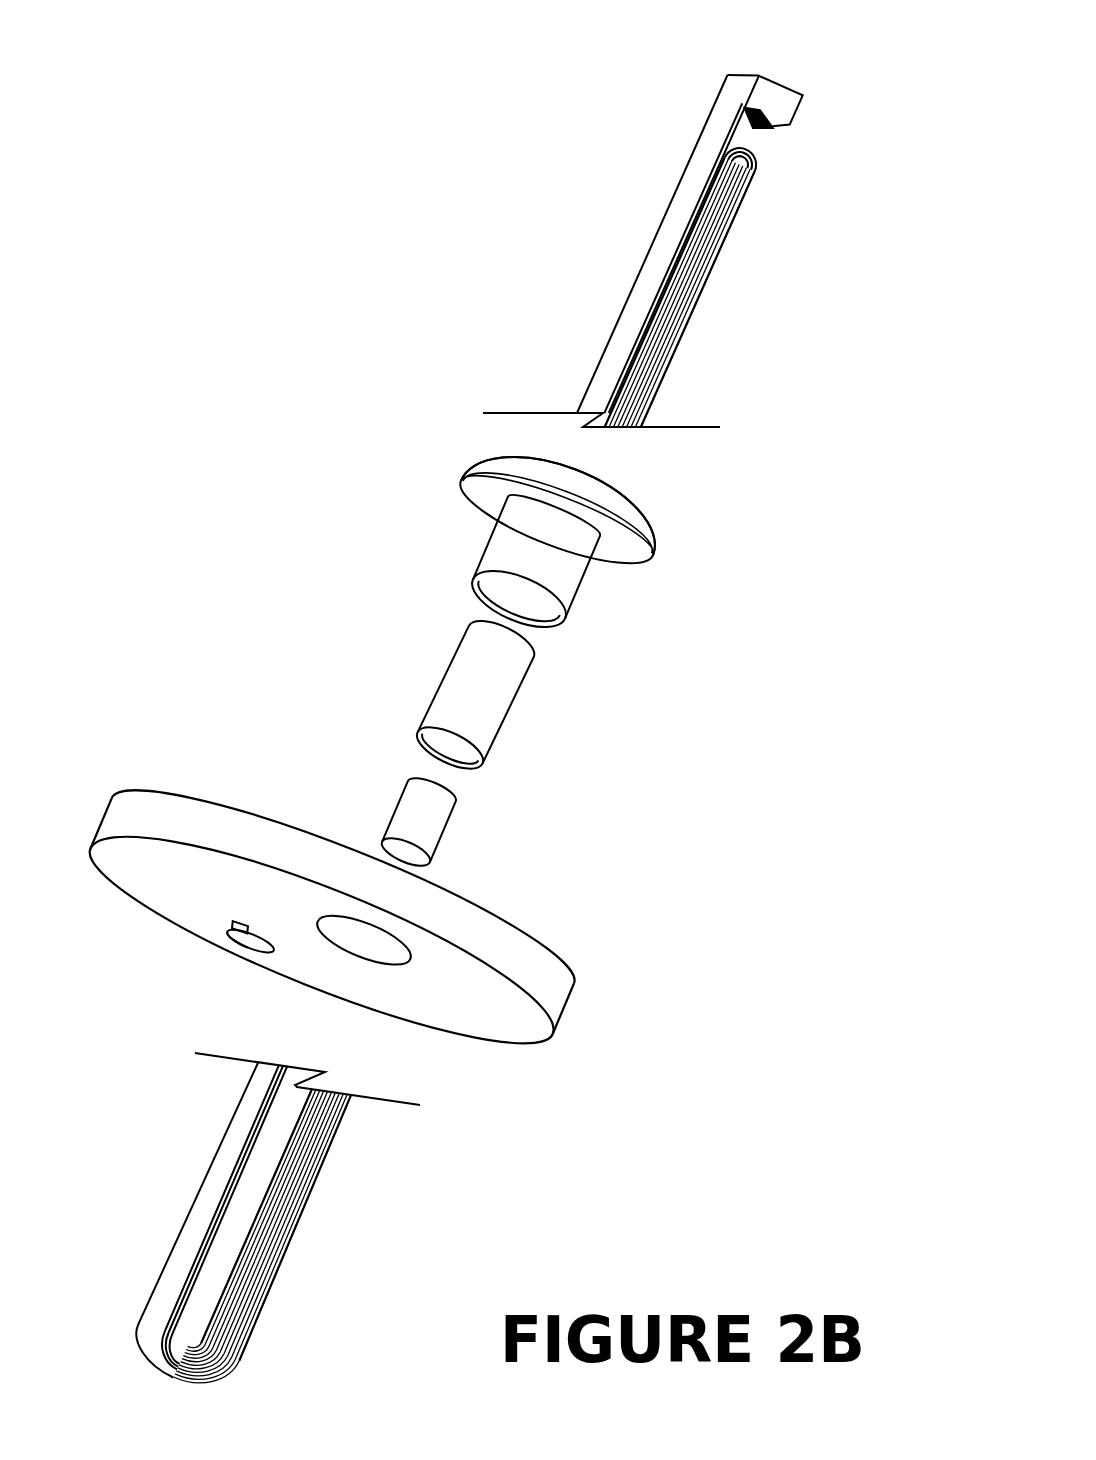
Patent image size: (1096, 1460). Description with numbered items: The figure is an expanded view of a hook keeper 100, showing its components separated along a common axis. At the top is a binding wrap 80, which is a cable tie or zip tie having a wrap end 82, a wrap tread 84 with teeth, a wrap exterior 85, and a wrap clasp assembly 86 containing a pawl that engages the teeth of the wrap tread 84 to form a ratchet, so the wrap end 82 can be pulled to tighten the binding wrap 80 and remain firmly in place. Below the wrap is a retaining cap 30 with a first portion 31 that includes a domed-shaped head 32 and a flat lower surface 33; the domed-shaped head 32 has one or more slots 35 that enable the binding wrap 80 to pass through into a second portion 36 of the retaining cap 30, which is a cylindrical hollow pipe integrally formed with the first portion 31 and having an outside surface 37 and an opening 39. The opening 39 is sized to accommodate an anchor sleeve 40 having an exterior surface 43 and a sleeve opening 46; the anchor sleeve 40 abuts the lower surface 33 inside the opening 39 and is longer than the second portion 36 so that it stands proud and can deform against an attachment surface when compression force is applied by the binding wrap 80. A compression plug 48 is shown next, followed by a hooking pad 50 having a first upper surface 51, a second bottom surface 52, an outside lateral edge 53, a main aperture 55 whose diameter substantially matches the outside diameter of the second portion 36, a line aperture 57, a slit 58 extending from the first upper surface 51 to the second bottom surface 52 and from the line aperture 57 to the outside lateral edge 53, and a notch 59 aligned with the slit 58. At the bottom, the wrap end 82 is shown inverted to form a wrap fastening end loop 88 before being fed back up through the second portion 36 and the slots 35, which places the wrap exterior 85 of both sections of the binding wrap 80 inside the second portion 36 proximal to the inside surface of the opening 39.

The hook keeper 100 is at (240, 150).
The binding wrap 80 is at (672, 98).
The wrap end 82 is at (752, 162).
The wrap tread 84 is at (668, 292).
The wrap exterior 85 is at (654, 243).
The wrap clasp assembly 86 is at (777, 98).
The wrap fastening end loop 88 is at (250, 1363).
The retaining cap 30 is at (400, 425).
The first portion 31 is at (443, 475).
The domed-shaped head 32 is at (623, 517).
The flat lower surface 33 is at (488, 495).
The slots 35 is at (590, 475).
The second portion 36 is at (587, 613).
The outside surface 37 is at (565, 583).
The opening 39 is at (525, 607).
The anchor sleeve 40 is at (417, 672).
The exterior surface 43 is at (490, 700).
The sleeve opening 46 is at (455, 760).
The compression plug 48 is at (412, 820).
The hooking pad 50 is at (562, 1074).
The first upper surface 51 is at (523, 932).
The second bottom surface 52 is at (485, 1020).
The outside lateral edge 53 is at (572, 1005).
The main aperture 55 is at (368, 937).
The line aperture 57 is at (252, 937).
The slit 58 is at (237, 938).
The notch 59 is at (207, 937).